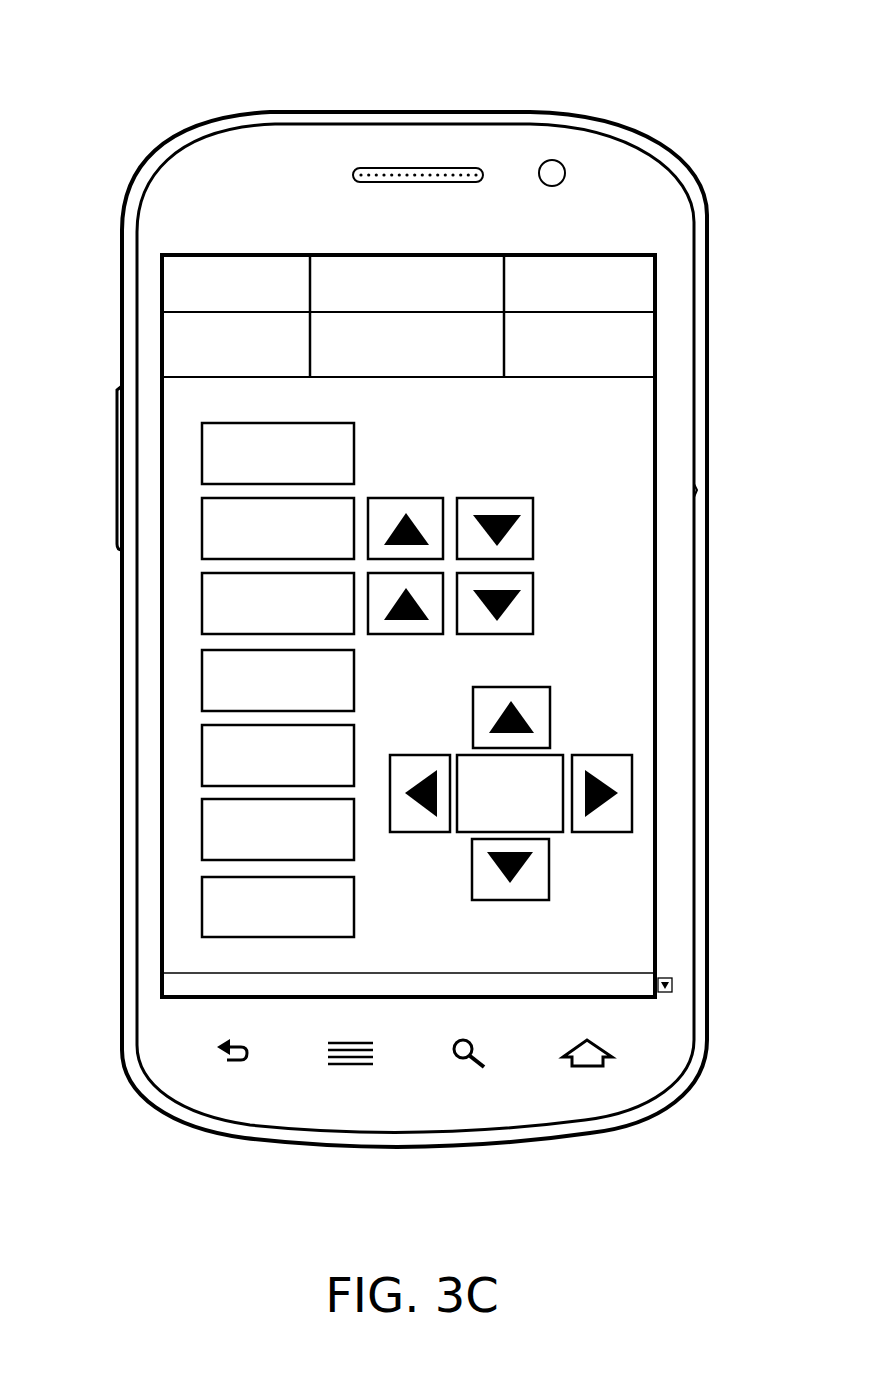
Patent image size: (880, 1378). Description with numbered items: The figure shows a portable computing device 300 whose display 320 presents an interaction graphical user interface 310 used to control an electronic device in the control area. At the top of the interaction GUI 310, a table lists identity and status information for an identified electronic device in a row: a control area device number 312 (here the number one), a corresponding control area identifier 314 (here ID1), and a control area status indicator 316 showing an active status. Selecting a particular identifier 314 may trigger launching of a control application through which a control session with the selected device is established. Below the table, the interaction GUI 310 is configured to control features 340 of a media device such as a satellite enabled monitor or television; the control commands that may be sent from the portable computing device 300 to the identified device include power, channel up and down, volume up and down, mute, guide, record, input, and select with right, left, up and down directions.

The portable computing device 300 is at (207, 116).
The interaction graphical user interface 310 is at (170, 245).
The control area device number 312 is at (230, 251).
The control area identifier 314 is at (426, 251).
The control area status indicator 316 is at (597, 249).
The display 320 is at (656, 245).
The features 340 is at (440, 460).